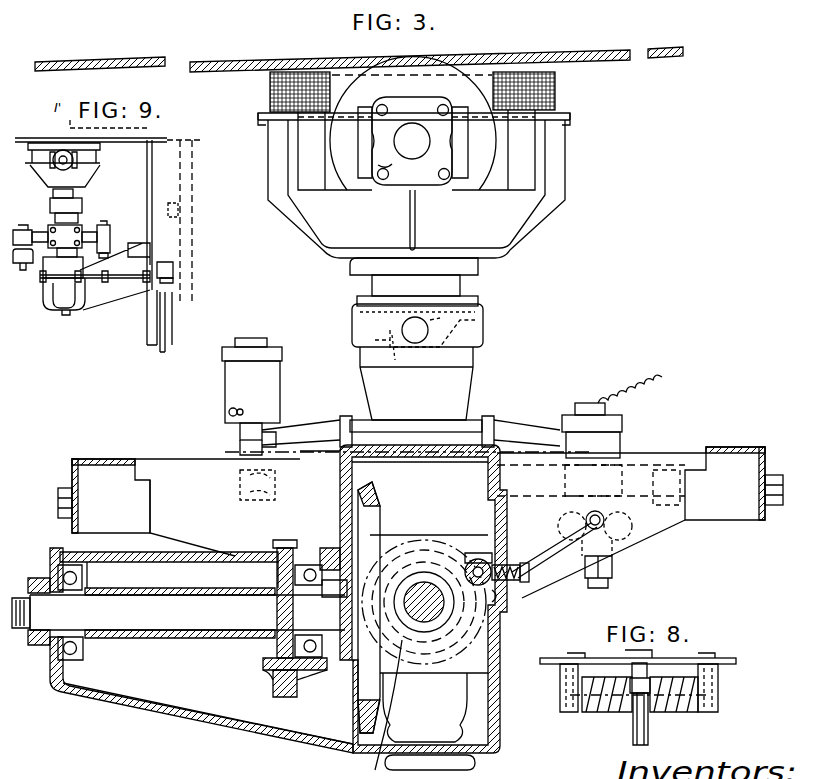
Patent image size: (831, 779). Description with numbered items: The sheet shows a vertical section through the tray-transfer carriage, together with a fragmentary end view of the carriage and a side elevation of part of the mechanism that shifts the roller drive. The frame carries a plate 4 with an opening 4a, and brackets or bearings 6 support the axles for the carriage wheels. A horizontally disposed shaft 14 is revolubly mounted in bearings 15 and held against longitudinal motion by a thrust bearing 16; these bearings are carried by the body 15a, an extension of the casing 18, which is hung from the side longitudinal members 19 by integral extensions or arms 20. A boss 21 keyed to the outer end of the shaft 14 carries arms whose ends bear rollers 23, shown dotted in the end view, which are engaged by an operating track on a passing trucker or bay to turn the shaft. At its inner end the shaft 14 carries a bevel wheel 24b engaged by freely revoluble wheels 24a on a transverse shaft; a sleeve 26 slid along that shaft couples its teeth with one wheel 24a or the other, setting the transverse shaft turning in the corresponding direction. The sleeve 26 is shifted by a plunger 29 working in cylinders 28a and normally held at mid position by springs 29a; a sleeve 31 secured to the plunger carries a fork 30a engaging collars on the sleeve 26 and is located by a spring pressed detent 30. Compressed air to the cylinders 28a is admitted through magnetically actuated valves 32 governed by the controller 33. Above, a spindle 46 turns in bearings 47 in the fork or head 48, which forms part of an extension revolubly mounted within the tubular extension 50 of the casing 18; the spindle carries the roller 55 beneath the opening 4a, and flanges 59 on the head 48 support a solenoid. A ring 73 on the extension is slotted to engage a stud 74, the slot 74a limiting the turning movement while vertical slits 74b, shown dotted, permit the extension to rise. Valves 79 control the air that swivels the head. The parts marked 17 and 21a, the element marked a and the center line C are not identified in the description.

In FIG. 3, the plate 4 is at (298, 62).
In FIG. 9, the plate 4 is at (107, 148).
In FIG. 3, the opening in plate 4a is at (388, 60).
In FIG. 9, the brackets or bearings 6 is at (150, 178).
In FIG. 3, the shaft 14 is at (186, 611).
In FIG. 3, the bearings 15 is at (80, 596).
In FIG. 9, the bearings 15 is at (175, 250).
In FIG. 3, the body 15a is at (180, 583).
In FIG. 3, the thrust bearing 16 is at (290, 590).
In FIG. 3, the housing casing 17 is at (168, 712).
In FIG. 9, the housing casing 17 is at (108, 278).
In FIG. 3, the casing 18 is at (500, 483).
In FIG. 3, the side longitudinal members 19 is at (718, 486).
In FIG. 3, the extensions or arms 20 is at (420, 524).
In FIG. 3, the boss 21 is at (45, 643).
In FIG. 9, the boss 21 is at (174, 281).
In FIG. 3, the drain 21a is at (381, 709).
In FIG. 9, the rollers 23 is at (174, 268).
In FIG. 3, the wheels 24a is at (430, 673).
In FIG. 3, the bevel wheel 24b is at (208, 713).
In FIG. 3, the sleeve 26 is at (530, 638).
In FIG. 8, the cylinders 28a is at (582, 694).
In FIG. 3, the plunger 29 is at (506, 580).
In FIG. 8, the plunger 29 is at (668, 712).
In FIG. 8, the springs 29a is at (680, 683).
In FIG. 3, the spring pressed detent 30 is at (492, 566).
In FIG. 3, the fork 30a is at (436, 618).
In FIG. 8, the fork 30a is at (625, 719).
In FIG. 3, the sleeve 31 is at (495, 600).
In FIG. 3, the magnetically actuated valves 32 is at (592, 430).
In FIG. 9, the magnetically actuated valves 32 is at (61, 245).
In FIG. 3, the controller 33 is at (616, 526).
In FIG. 3, the spindle 46 is at (413, 141).
In FIG. 9, the spindle 46 is at (63, 160).
In FIG. 3, the bearings 47 is at (386, 182).
In FIG. 9, the bearings 47 is at (50, 160).
In FIG. 3, the fork or head 48 is at (414, 165).
In FIG. 9, the fork or head 48 is at (62, 167).
In FIG. 3, the tubular extension 50 is at (411, 397).
In FIG. 9, the tubular extension 50 is at (50, 224).
In FIG. 3, the roller 55 is at (440, 82).
In FIG. 9, the roller 55 is at (46, 139).
In FIG. 3, the flanges 59 is at (266, 124).
In FIG. 9, the flanges 59 is at (53, 197).
In FIG. 3, the ring 73 is at (478, 341).
In FIG. 3, the stud 74 is at (425, 332).
In FIG. 3, the slot 74a is at (480, 326).
In FIG. 3, the vertical slits 74b is at (396, 361).
In FIG. 3, the valves 79 is at (252, 396).
In FIG. 3, the wire a is at (635, 387).
In FIG. 9, the wire a is at (30, 211).
In FIG. 3, the center line C is at (405, 447).